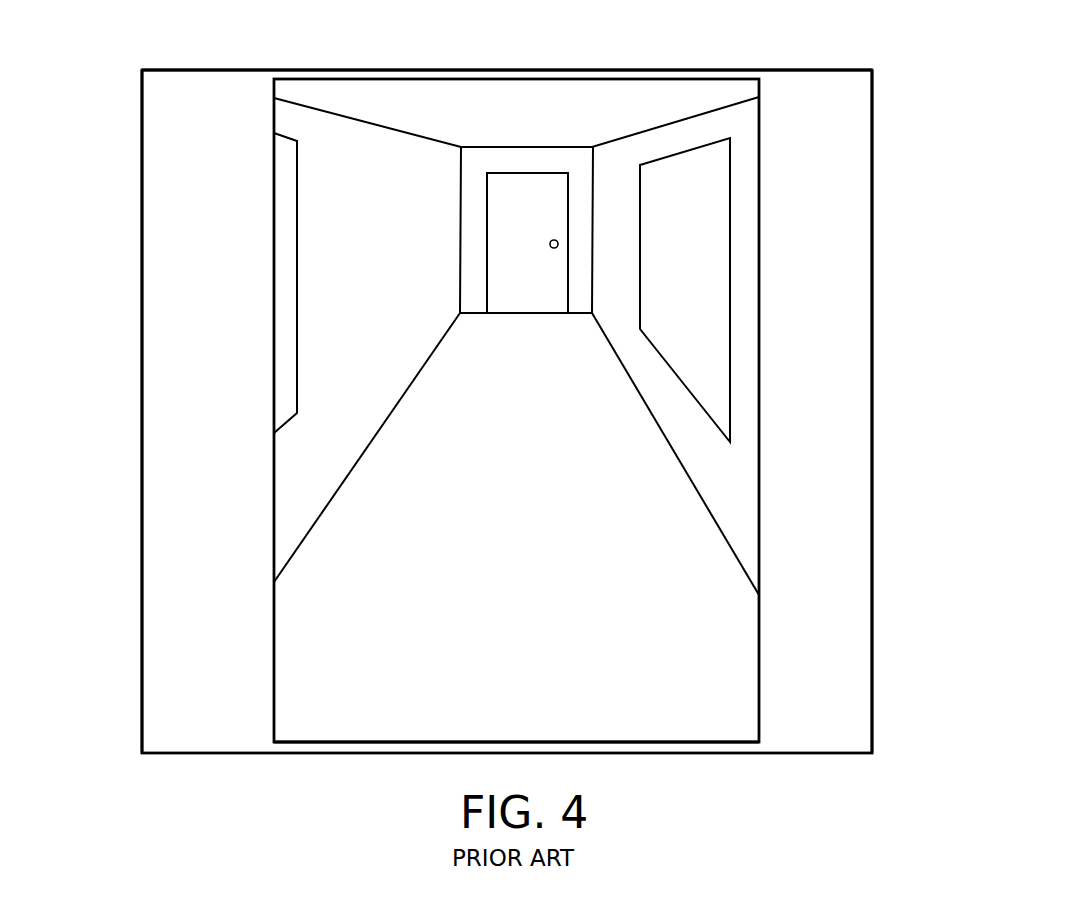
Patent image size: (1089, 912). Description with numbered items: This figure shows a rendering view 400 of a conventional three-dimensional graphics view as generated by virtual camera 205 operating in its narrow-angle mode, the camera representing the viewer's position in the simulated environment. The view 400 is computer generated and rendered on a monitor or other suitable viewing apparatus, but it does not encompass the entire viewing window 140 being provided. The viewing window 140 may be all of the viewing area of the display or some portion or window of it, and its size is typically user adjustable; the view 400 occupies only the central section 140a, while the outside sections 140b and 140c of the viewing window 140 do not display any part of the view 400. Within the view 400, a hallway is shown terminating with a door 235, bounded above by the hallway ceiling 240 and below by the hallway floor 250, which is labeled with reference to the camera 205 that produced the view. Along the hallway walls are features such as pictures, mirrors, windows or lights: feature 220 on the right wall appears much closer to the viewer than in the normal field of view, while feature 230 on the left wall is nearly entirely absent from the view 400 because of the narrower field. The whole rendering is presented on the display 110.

The rendering view 400 is at (1086, 66).
The display 110 is at (823, 373).
The viewing window 140 is at (189, 70).
The camera view window 140a is at (460, 79).
The outside section of viewing window 140b is at (185, 415).
The outside section of viewing window 140c is at (837, 572).
The hallway floor 250 is at (655, 730).
The virtual camera 205 is at (542, 717).
The hallway ceiling 240 is at (673, 92).
The door 235 is at (523, 187).
The feature 220 is at (708, 232).
The feature 230 is at (282, 293).